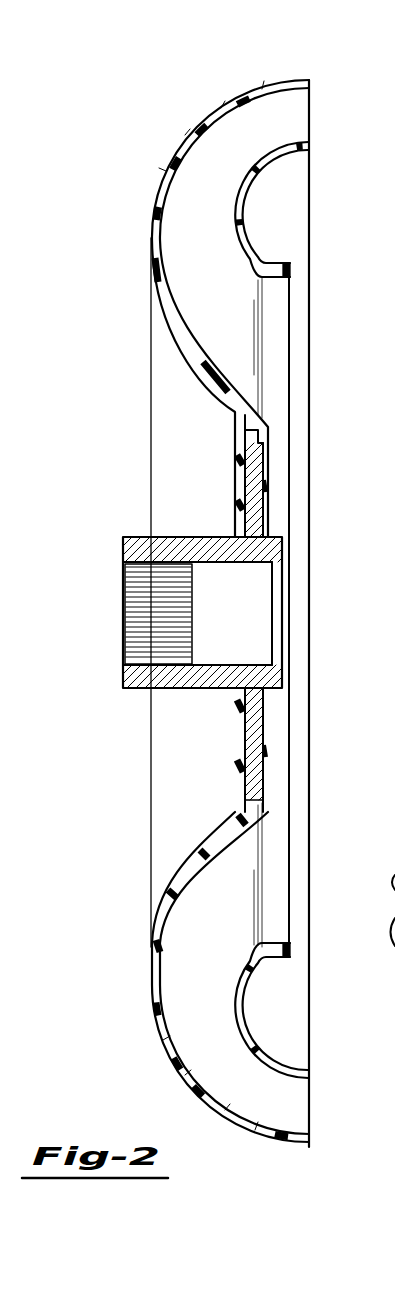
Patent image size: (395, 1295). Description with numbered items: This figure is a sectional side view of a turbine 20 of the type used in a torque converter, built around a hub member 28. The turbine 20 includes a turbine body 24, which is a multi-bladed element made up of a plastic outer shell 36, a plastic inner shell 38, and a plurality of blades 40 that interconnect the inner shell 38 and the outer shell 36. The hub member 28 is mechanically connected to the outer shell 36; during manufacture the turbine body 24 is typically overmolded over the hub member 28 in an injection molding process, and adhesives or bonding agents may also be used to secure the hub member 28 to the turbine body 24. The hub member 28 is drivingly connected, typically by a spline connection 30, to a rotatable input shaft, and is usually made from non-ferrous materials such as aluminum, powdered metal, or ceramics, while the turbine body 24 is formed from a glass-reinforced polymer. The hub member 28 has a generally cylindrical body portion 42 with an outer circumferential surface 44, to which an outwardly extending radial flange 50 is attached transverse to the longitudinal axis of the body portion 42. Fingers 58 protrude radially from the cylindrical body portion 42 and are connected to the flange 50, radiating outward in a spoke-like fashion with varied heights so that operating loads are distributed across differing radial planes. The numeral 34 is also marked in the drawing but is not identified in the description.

The turbine 20 is at (216, 576).
The turbine body 24 is at (179, 611).
The hub member 28 is at (133, 690).
The spline connection 30 is at (135, 613).
The rim side face 34 is at (352, 613).
The outer shell 36 is at (172, 147).
The inner shell 38 is at (305, 170).
The blades 40 is at (283, 118).
The cylindrical body portion 42 is at (180, 537).
The outer circumferential surface 44 is at (133, 530).
The radial flange 50 is at (252, 785).
The fingers 58 is at (258, 728).